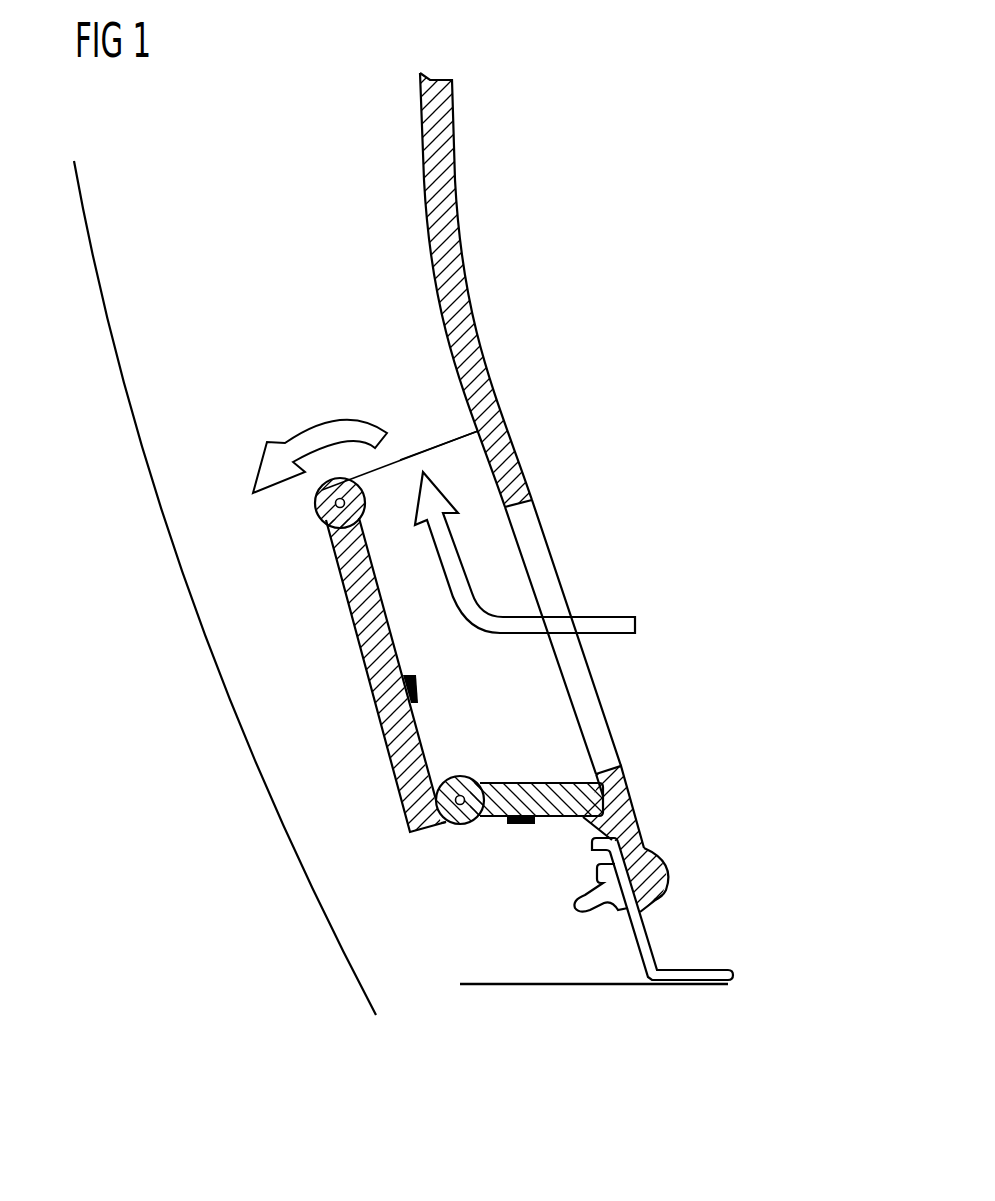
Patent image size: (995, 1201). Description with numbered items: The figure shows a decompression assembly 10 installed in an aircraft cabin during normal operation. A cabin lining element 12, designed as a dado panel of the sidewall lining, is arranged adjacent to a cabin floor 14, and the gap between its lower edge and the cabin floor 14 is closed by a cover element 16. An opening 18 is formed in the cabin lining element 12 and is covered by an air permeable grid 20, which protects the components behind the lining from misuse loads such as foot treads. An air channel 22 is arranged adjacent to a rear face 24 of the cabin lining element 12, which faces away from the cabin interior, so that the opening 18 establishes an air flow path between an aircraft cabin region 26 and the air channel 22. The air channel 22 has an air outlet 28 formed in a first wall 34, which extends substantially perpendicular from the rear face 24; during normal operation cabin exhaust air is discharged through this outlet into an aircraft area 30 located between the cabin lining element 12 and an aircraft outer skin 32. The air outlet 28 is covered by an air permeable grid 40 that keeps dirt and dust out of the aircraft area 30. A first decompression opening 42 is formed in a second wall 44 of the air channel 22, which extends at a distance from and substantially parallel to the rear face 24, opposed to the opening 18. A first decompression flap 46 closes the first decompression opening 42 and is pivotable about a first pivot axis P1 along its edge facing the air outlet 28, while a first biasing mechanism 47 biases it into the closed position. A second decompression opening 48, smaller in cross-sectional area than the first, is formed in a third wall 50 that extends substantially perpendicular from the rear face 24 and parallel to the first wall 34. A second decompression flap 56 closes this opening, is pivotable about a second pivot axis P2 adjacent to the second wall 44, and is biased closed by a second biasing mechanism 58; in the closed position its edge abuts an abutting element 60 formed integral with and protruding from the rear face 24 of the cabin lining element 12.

The decompression assembly 10 is at (670, 104).
The cabin lining element 12 is at (468, 297).
The cabin floor 14 is at (594, 987).
The cover element 16 is at (641, 916).
The opening 18 is at (606, 746).
The air permeable grid 20 is at (541, 526).
The air channel 22 is at (540, 690).
The rear face 24 is at (486, 478).
The aircraft cabin region 26 is at (735, 765).
The air outlet 28 is at (410, 452).
The aircraft area 30 is at (342, 676).
The aircraft outer skin 32 is at (140, 456).
The first wall 34 is at (432, 438).
The air permeable grid 40 is at (376, 450).
The first decompression opening 42 is at (416, 727).
The second wall 44 is at (340, 578).
The first decompression flap 46 is at (370, 620).
The first biasing mechanism 47 is at (418, 682).
The second decompression opening 48 is at (580, 818).
The third wall 50 is at (485, 830).
The second decompression flap 56 is at (510, 790).
The stop pad 58 is at (515, 826).
The abutting element 60 is at (593, 820).
The first pivot axis P1 is at (328, 510).
The second pivot axis P2 is at (456, 816).